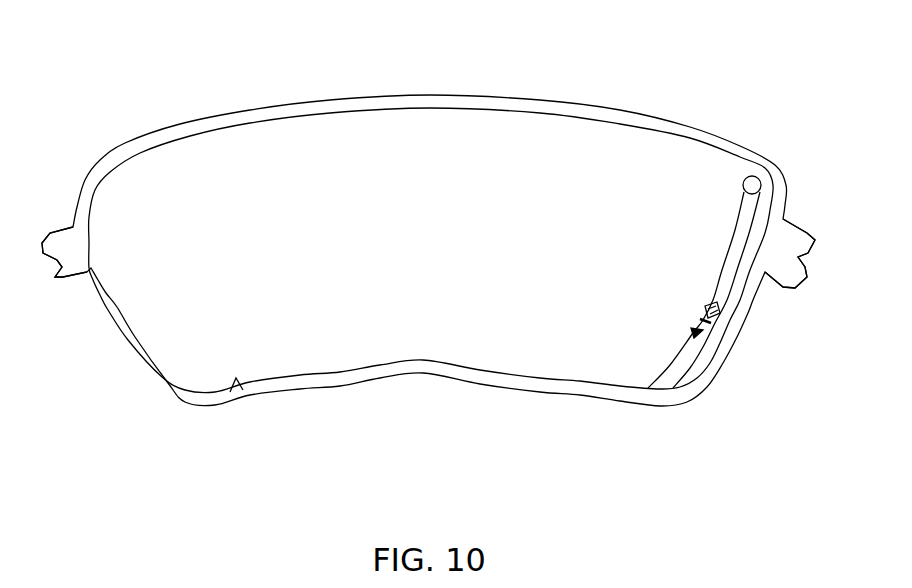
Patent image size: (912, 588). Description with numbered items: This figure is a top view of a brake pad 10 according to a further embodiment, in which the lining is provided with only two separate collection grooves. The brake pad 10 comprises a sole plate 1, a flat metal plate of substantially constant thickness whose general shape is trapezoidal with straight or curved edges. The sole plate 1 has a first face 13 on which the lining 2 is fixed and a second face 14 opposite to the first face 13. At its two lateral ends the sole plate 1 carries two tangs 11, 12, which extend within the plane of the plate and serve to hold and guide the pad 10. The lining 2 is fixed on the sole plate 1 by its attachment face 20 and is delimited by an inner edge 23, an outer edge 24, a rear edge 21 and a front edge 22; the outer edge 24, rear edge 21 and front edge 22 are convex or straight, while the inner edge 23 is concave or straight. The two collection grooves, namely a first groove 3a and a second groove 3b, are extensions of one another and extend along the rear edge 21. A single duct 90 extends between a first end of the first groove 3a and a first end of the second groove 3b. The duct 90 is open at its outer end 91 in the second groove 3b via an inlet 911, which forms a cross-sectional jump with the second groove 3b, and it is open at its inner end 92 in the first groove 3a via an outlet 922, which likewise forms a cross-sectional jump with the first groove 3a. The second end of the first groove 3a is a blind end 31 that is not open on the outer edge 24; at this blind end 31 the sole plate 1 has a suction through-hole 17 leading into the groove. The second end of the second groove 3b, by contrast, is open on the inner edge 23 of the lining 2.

The brake pad 10 is at (160, 85).
The sole plate 1 is at (428, 378).
The lining 2 is at (620, 157).
The attachment face 20 is at (520, 147).
The outer edge 24 is at (478, 110).
The tang 12 is at (67, 247).
The tang 11 is at (783, 219).
The front edge 22 is at (127, 332).
The first face 13 is at (230, 392).
The inner edge 23 is at (363, 370).
The second face 14 is at (538, 391).
The suction through-hole 17 is at (752, 177).
The blind end 31 is at (752, 177).
The first groove 3a is at (740, 252).
The second groove 3b is at (683, 363).
The rear edge 21 is at (730, 325).
The inlet 911 is at (716, 345).
The inner end 92 is at (705, 316).
The outlet 922 is at (720, 300).
The duct 90 is at (703, 321).
The outer end 91 is at (697, 333).